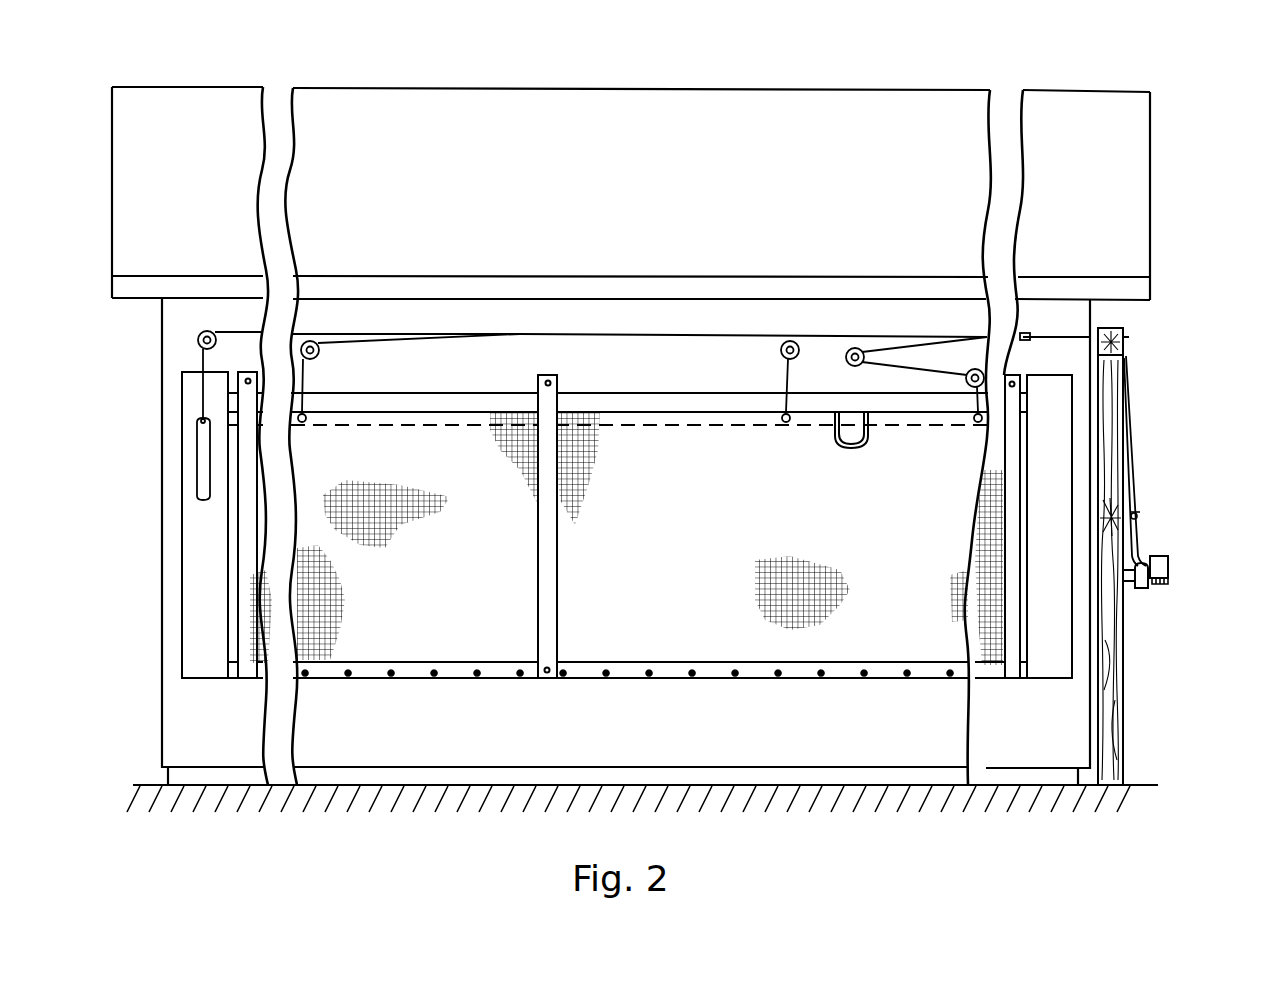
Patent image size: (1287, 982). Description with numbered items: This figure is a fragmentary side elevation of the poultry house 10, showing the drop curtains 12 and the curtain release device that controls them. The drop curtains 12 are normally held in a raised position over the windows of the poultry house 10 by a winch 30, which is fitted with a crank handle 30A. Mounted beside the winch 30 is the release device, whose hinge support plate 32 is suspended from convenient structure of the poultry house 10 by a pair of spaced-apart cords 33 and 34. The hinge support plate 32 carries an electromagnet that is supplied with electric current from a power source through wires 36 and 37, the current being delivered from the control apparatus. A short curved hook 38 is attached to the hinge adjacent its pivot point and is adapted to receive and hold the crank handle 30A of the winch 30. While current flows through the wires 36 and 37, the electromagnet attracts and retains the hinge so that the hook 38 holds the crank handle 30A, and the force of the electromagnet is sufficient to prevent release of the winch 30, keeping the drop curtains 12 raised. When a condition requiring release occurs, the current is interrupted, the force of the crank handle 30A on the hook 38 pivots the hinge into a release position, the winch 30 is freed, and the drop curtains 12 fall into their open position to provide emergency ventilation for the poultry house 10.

The poultry house 10 is at (950, 74).
The drop curtains 12 is at (1003, 600).
The winch 30 is at (1155, 562).
The crank handle 30A is at (1172, 580).
The hinge support plate 32 is at (1170, 561).
The cord 33 is at (1138, 458).
The cord 34 is at (1137, 463).
The wire 36 is at (1137, 517).
The wire 37 is at (1137, 513).
The short curved hook 38 is at (1162, 586).